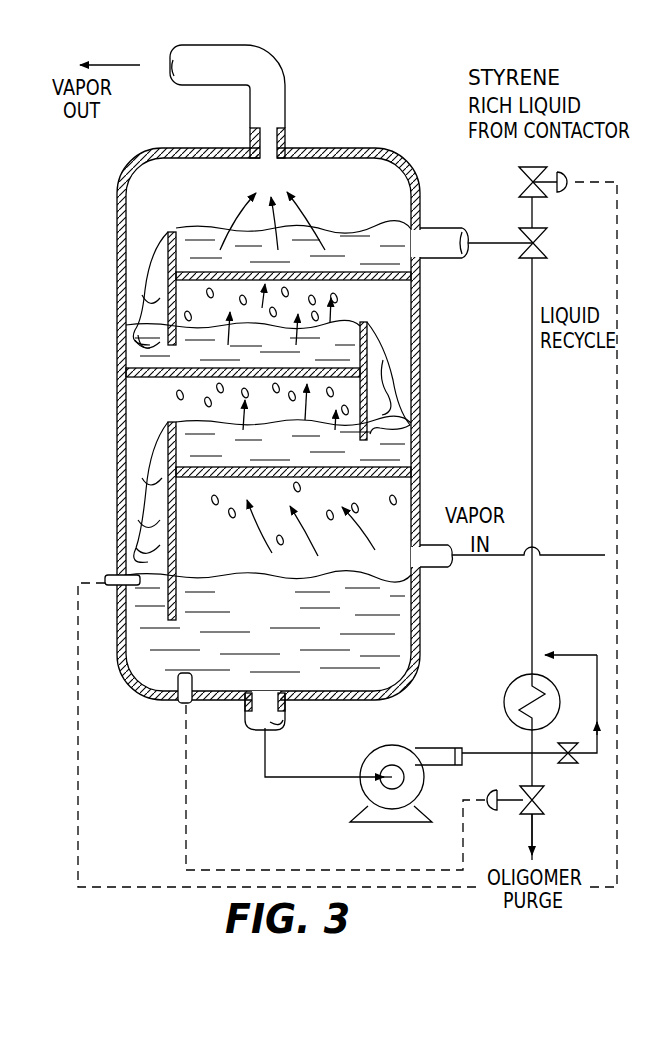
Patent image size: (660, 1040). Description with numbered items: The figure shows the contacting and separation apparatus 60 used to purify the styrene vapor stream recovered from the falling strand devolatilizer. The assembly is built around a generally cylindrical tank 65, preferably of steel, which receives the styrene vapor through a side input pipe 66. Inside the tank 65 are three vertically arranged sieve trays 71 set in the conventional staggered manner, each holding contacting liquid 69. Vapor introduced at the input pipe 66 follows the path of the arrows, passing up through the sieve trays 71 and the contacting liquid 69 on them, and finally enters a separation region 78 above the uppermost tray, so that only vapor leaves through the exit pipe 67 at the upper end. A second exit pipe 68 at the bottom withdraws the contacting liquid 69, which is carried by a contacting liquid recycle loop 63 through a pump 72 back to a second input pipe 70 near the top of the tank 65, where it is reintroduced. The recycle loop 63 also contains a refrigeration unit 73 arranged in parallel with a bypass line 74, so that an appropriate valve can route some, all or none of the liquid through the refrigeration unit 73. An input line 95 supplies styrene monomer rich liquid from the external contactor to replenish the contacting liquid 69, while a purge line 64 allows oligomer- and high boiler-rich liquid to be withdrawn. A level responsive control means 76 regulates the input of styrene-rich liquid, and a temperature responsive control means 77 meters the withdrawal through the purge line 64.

The contacting and separation apparatus 60 is at (105, 410).
The contacting liquid recycle loop 63 is at (532, 432).
The purge line 64 is at (532, 822).
The tank 65 is at (420, 335).
The side input pipe 66 is at (437, 566).
The exit pipe 67 is at (235, 81).
The second exit pipe 68 is at (286, 716).
The contacting liquid 69 is at (276, 616).
The second input pipe 70 is at (446, 235).
The sieve trays 71 is at (368, 280).
The pump 72 is at (418, 750).
The refrigeration unit 73 is at (518, 692).
The bypass line 74 is at (597, 690).
The control means 76 is at (112, 575).
The temperature responsive control means 77 is at (178, 698).
The separation region 78 is at (215, 191).
The input line 95 is at (548, 199).